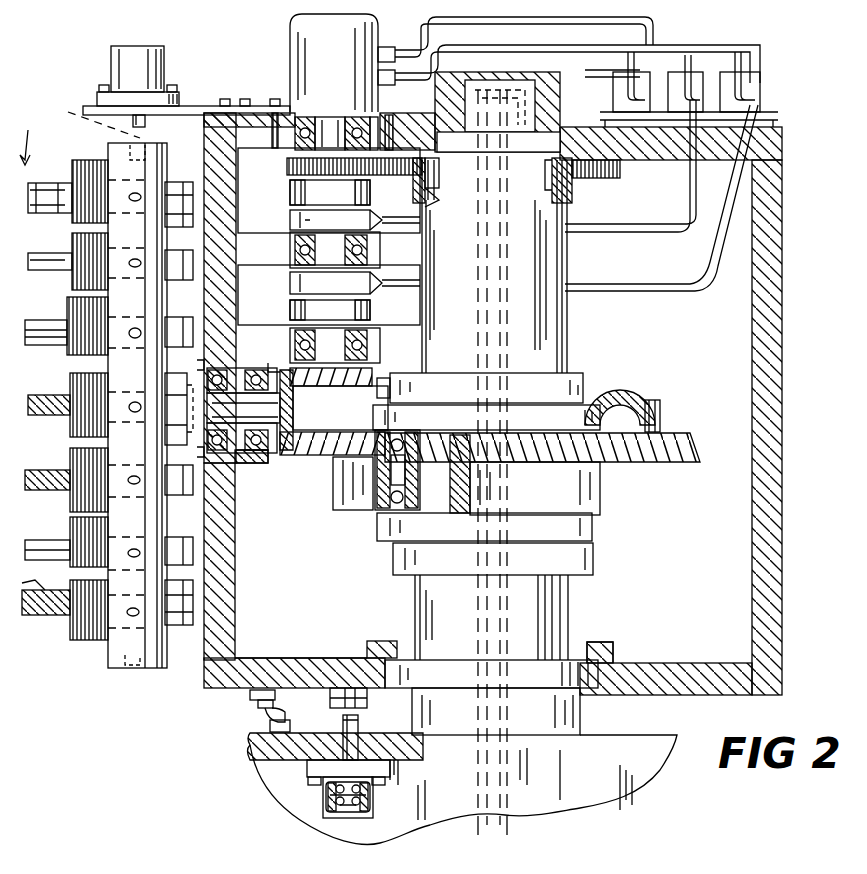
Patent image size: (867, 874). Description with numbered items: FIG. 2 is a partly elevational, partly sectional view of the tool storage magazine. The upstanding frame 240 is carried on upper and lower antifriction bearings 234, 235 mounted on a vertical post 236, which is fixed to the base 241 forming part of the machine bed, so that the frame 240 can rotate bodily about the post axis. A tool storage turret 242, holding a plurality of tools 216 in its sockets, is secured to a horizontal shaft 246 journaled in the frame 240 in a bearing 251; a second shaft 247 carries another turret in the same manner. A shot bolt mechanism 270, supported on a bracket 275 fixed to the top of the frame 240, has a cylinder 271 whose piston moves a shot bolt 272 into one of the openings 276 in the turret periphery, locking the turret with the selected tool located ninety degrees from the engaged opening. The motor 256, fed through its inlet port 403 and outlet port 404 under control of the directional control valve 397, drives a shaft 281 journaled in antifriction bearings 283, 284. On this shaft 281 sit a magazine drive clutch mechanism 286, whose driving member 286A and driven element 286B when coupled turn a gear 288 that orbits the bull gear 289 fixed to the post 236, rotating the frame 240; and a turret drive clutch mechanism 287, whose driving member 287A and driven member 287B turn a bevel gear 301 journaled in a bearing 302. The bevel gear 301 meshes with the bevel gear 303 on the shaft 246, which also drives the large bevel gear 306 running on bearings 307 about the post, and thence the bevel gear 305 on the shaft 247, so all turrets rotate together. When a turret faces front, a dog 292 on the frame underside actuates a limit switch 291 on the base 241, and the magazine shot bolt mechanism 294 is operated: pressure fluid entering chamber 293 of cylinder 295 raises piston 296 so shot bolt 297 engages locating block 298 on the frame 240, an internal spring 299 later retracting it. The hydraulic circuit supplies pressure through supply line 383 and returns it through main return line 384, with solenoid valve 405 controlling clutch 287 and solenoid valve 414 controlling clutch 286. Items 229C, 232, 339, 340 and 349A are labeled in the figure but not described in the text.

The tool 216 is at (34, 135).
The conduit 229C is at (145, 873).
The electrical connectors 232 is at (105, 160).
The upper antifriction bearing 234 is at (460, 153).
The lower antifriction bearing 235 is at (580, 660).
The vertical post 236 is at (565, 324).
The frame 240 is at (781, 303).
The base 241 is at (640, 778).
The tool storage turret 242 is at (117, 665).
The shaft 246 is at (333, 476).
The shaft 247 is at (660, 410).
The bearing 251 is at (240, 465).
The motor 256 is at (292, 38).
The shot bolt mechanism 270 is at (122, 67).
The cylinder 271 is at (143, 55).
The shot bolt 272 is at (147, 125).
The bracket 275 is at (185, 109).
The opening 276 is at (140, 138).
The shaft 281 is at (330, 120).
The antifriction bearing 283 is at (365, 140).
The antifriction bearing 284 is at (358, 250).
The magazine drive clutch mechanism 286 is at (331, 203).
The driving member 286A is at (290, 220).
The driven element 286B is at (290, 188).
The turret drive clutch mechanism 287 is at (329, 295).
The driving member 287A is at (290, 278).
The driven member 287B is at (290, 303).
The gear 288 is at (287, 164).
The bull gear 289 is at (597, 178).
The limit switch 291 is at (268, 718).
The dog 292 is at (245, 692).
The chamber 293 is at (343, 814).
The shot bolt mechanism 294 is at (280, 783).
The cylinder 295 is at (373, 813).
The piston 296 is at (335, 813).
The shot bolt 297 is at (358, 723).
The locating block 298 is at (345, 690).
The internal spring 299 is at (326, 798).
The bevel gear 301 is at (365, 370).
The bearing 302 is at (290, 348).
The bevel gear 303 is at (296, 410).
The bevel gear 305 is at (622, 380).
The large bevel gear 306 is at (665, 462).
The bearings 307 is at (375, 510).
The conduit 339 is at (492, 866).
The conduit 340 is at (616, 866).
The conduit 349A is at (425, 873).
The pressure supply line 383 is at (480, 608).
The main return line 384 is at (505, 813).
The directional control valve 397 is at (643, 52).
The inlet port 403 is at (380, 50).
The outlet port 404 is at (380, 77).
The solenoid control valve 405 is at (783, 99).
The solenoid actuated valve 414 is at (718, 62).